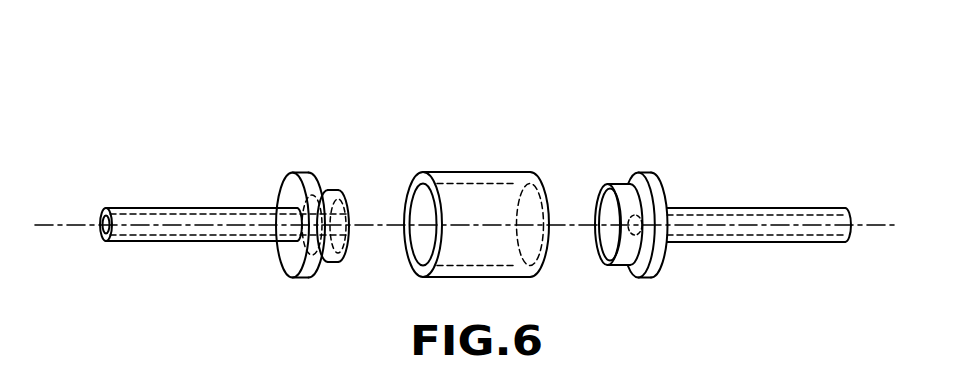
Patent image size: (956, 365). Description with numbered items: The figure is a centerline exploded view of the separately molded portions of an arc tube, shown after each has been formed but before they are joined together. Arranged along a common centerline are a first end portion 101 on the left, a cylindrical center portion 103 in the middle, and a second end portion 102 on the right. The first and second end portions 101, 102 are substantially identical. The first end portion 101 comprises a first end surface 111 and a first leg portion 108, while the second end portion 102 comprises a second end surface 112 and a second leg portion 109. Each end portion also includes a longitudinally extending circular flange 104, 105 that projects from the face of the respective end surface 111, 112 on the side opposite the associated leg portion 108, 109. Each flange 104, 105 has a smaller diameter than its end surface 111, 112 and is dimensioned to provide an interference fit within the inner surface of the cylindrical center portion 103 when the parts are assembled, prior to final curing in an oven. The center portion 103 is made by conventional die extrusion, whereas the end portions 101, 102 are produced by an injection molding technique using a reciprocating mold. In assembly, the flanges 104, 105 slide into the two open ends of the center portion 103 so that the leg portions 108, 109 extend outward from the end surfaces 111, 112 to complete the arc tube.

The first end portion 101 is at (153, 178).
The second end portion 102 is at (704, 178).
The cylindrical center portion 103 is at (477, 172).
The circular flange 104 is at (337, 190).
The circular flange 105 is at (625, 183).
The first leg portion 108 is at (170, 241).
The second leg portion 109 is at (782, 238).
The first end surface 111 is at (290, 188).
The second end surface 112 is at (652, 174).